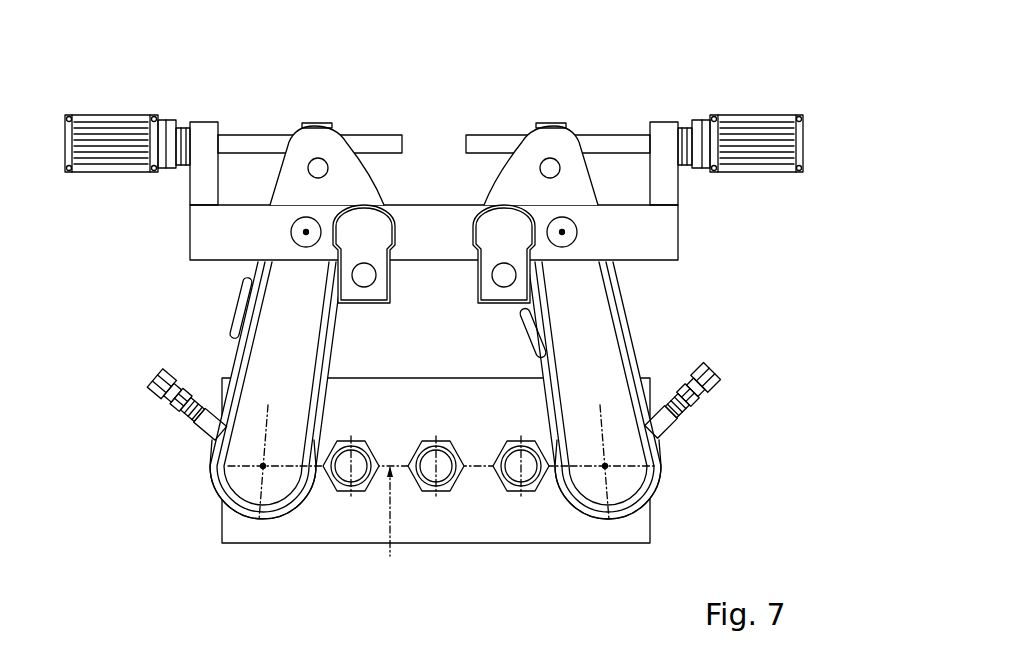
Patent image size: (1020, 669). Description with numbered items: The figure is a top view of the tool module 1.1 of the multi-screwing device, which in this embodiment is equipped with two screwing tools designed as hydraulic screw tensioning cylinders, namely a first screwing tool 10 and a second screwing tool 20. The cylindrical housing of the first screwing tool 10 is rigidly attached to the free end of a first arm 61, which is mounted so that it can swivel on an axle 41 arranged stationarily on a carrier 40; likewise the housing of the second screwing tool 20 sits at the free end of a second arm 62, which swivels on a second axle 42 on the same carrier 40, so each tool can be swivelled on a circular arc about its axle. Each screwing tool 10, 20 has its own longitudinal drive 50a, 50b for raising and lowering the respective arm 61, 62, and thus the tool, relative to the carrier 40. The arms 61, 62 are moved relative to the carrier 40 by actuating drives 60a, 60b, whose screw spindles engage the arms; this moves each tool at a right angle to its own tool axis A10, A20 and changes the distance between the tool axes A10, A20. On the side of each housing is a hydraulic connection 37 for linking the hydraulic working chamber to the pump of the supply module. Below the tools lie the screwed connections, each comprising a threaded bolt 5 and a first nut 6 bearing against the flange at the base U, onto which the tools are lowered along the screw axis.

The tool module 1.1 is at (737, 318).
The first screwing tool 10 is at (654, 477).
The second screwing tool 20 is at (212, 472).
The tool axis A10 is at (607, 462).
The tool axis A20 is at (262, 465).
The base U is at (368, 407).
The threaded bolt 5 is at (452, 462).
The first nut 6 is at (450, 462).
The hydraulic connection 37 is at (170, 407).
The carrier 40 is at (227, 232).
The axle 41 is at (562, 230).
The second axle 42 is at (306, 230).
The longitudinal drive 50a is at (505, 228).
The longitudinal drive 50b is at (363, 232).
The actuating drive 60a is at (717, 113).
The actuating drive 60b is at (263, 143).
The first arm 61 is at (596, 328).
The second arm 62 is at (278, 331).